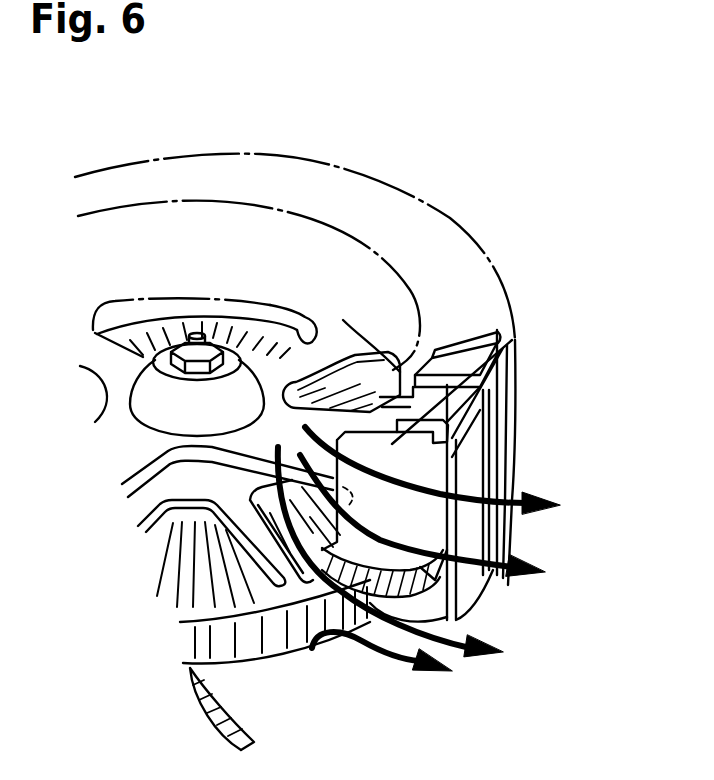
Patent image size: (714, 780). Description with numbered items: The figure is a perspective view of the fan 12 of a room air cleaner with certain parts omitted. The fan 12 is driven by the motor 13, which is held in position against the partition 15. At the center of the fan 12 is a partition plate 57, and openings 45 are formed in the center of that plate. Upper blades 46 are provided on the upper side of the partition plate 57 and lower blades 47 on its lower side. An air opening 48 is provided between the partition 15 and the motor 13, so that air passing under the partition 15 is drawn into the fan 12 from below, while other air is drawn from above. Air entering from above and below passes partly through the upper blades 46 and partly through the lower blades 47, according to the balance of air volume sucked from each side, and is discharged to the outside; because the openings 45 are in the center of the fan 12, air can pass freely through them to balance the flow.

The fan 12 is at (210, 153).
The partition plate 57 is at (305, 352).
The openings 45 is at (341, 352).
The upper blades 46 is at (503, 373).
The lower blades 47 is at (463, 607).
The motor 13 is at (198, 573).
The air opening 48 is at (235, 663).
The partition 15 is at (245, 706).